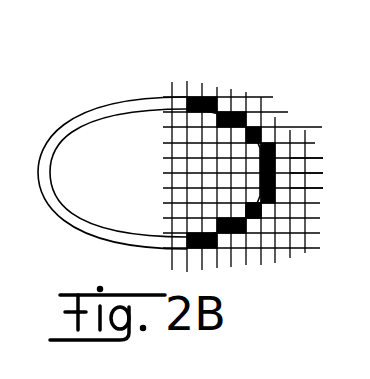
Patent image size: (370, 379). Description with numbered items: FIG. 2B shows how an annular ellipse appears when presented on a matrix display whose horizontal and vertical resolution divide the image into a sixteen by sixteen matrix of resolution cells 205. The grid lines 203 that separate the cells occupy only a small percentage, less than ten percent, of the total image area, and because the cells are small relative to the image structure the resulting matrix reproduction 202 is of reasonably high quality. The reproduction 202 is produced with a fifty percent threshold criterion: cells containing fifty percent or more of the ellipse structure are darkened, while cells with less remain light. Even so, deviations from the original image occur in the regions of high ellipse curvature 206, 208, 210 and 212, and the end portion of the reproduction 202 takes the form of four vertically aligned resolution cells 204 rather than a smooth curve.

The matrix reproduction 202 is at (303, 84).
The grid lines 203 is at (263, 120).
The four vertically aligned resolution cells 204 is at (277, 152).
The sixteen by sixteen matrix of resolution cells 205 is at (298, 182).
The region of high ellipse curvature 206 is at (252, 197).
The region of high ellipse curvature 208 is at (240, 206).
The region of high ellipse curvature 210 is at (252, 218).
The region of high ellipse curvature 212 is at (262, 207).